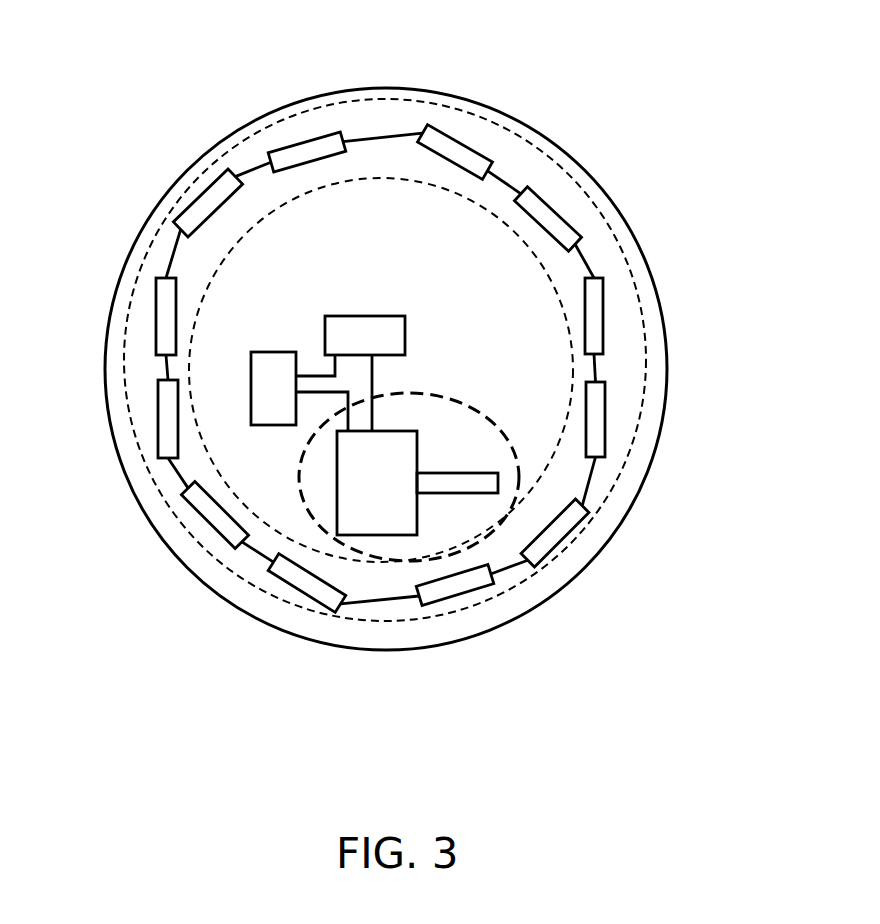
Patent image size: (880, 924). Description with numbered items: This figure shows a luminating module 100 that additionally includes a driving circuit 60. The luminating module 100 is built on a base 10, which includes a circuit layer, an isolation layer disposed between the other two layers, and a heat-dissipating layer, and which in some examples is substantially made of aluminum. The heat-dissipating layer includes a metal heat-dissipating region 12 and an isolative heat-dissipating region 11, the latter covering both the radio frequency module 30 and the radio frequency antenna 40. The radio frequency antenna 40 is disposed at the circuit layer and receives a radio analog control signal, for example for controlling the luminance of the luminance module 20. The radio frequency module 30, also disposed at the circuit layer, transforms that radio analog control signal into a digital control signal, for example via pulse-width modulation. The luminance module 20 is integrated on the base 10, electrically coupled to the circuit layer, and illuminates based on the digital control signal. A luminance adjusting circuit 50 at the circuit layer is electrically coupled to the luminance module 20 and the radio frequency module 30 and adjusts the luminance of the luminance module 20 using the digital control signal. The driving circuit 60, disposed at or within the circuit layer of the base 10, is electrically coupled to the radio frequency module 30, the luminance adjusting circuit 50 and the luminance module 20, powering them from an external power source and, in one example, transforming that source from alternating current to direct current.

The luminating module 100 is at (750, 57).
The base 10 is at (420, 87).
The isolative heat-dissipating region 11 is at (512, 455).
The metal heat-dissipating region 12 is at (520, 362).
The luminance module 20 is at (513, 173).
The radio frequency module 30 is at (388, 509).
The radio frequency antenna 40 is at (481, 493).
The luminance adjusting circuit 50 is at (380, 337).
The driving circuit 60 is at (272, 396).